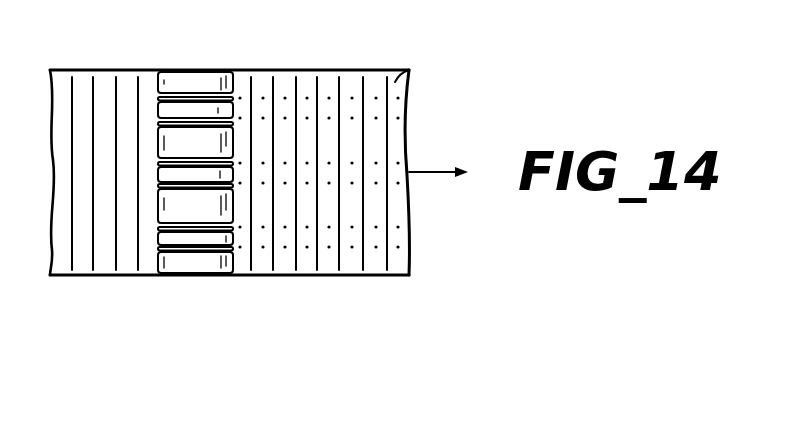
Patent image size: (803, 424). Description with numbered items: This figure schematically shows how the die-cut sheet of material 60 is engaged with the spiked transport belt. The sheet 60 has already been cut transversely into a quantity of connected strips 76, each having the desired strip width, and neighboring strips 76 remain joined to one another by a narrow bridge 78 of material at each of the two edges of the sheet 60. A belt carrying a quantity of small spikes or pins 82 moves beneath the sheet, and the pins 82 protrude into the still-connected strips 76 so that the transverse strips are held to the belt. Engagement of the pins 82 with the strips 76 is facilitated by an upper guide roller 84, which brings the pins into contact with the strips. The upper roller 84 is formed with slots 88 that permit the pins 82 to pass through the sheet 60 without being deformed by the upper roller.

The sheet of material 60 is at (103, 277).
The strip 76 is at (101, 90).
The narrow bridge 78 is at (393, 70).
The pins 82 is at (400, 118).
The upper guide roller 84 is at (203, 80).
The slots 88 is at (192, 247).